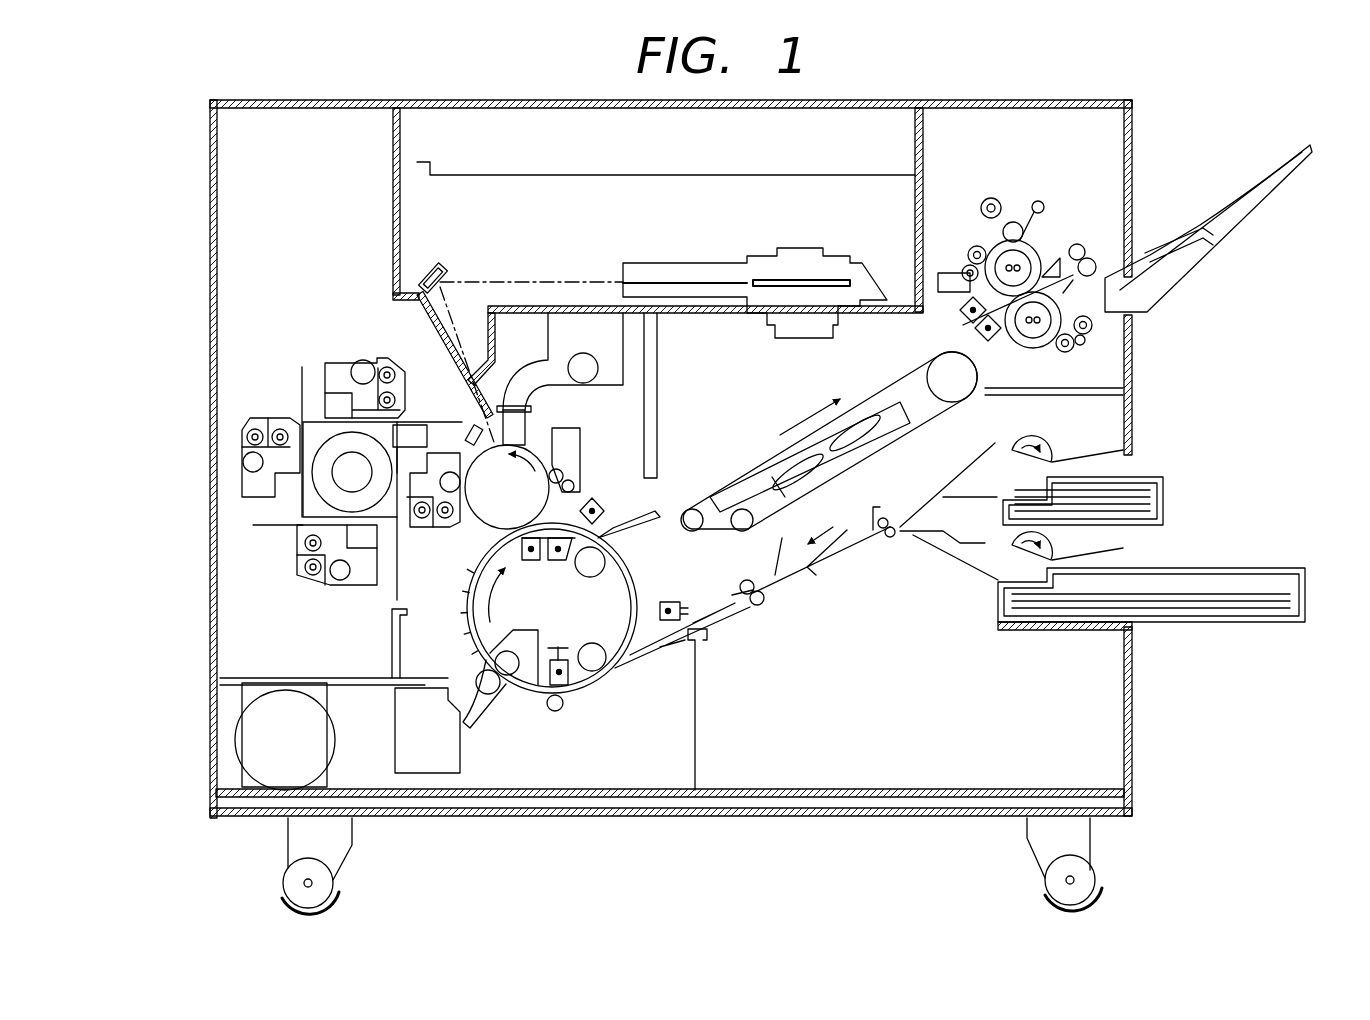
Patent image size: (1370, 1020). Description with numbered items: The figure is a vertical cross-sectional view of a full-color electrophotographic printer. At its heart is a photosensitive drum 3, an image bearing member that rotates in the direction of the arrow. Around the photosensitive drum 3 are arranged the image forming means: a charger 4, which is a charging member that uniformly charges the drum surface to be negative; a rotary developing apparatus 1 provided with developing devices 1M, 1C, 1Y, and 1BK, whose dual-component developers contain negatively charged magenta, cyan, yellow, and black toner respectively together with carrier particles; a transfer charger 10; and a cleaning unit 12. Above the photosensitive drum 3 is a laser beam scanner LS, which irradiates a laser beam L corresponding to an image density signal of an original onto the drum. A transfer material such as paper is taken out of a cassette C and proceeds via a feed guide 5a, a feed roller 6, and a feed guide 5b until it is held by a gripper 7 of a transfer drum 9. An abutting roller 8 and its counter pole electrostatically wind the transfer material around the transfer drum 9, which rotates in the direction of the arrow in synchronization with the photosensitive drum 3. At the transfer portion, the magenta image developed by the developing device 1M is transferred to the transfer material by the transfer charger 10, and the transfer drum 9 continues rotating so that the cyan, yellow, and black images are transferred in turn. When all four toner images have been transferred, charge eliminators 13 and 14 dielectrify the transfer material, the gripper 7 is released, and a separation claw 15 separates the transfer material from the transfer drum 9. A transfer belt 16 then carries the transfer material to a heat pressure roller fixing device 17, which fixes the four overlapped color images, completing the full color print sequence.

The rotary developing apparatus 1 is at (262, 542).
The developing device 1Y is at (245, 487).
The developing device 1M is at (424, 528).
The developing device 1C is at (300, 575).
The developing device 1BK is at (405, 408).
The photosensitive drum 3 is at (483, 512).
The charger 4 is at (528, 428).
The feed guide 5a is at (790, 582).
The feed guide 5b is at (636, 662).
The feed roller 6 is at (740, 582).
The gripper 7 is at (466, 621).
The abutting roller 8 is at (552, 712).
The transfer drum 9 is at (600, 692).
The transfer charger 10 is at (528, 562).
The cleaning unit 12 is at (582, 447).
The charge eliminator 13 is at (562, 562).
The charge eliminator 14 is at (604, 522).
The separation claw 15 is at (647, 528).
The transfer belt 16 is at (880, 385).
The fixing device 17 is at (1055, 238).
The laser beam L is at (563, 280).
The laser beam scanner LS is at (815, 250).
The cassette C is at (1208, 570).